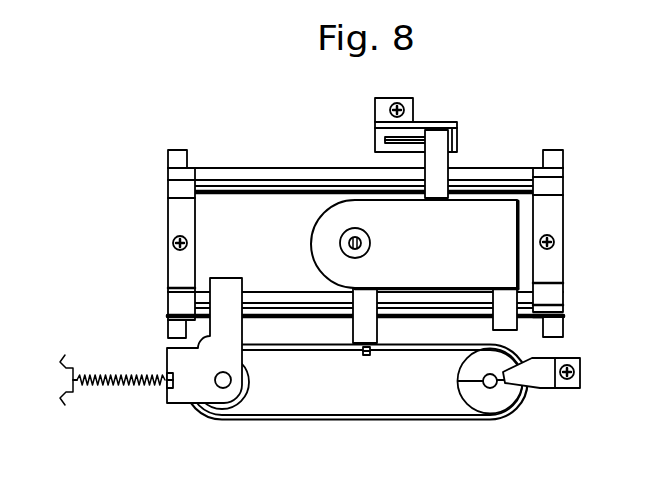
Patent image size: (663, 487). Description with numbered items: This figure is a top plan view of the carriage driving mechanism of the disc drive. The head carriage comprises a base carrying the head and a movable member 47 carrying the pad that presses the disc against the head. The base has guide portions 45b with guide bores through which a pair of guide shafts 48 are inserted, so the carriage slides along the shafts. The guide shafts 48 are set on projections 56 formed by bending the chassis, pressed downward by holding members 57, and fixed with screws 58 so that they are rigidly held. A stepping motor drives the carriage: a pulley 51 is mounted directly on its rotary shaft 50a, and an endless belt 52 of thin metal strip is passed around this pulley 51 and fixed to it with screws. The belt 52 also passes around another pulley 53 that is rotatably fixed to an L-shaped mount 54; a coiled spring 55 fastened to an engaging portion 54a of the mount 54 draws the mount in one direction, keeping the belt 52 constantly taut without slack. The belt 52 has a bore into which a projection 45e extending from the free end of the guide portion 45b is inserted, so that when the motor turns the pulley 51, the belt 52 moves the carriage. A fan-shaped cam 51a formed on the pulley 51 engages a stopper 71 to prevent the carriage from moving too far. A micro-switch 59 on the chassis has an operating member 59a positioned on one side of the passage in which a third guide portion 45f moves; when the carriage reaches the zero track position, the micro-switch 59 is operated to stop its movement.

The guide portion 45b is at (358, 336).
The projection 45e is at (370, 352).
The third guide portion 45f is at (438, 160).
The movable member 47 is at (345, 214).
The guide shaft 48 is at (240, 181).
The rotary shaft 50a is at (498, 386).
The pulley 51 is at (485, 400).
The fan-shaped cam 51a is at (481, 359).
The belt 52 is at (352, 421).
The pulley 53 is at (250, 401).
The mount 54 is at (190, 390).
The engaging portion 54a is at (165, 390).
The coiled spring 55 is at (123, 387).
The projections 56 is at (174, 158).
The holding members 57 is at (172, 215).
The screws 58 is at (175, 249).
The micro-switch 59 is at (375, 136).
The operating member 59a is at (405, 142).
The stopper 71 is at (535, 378).